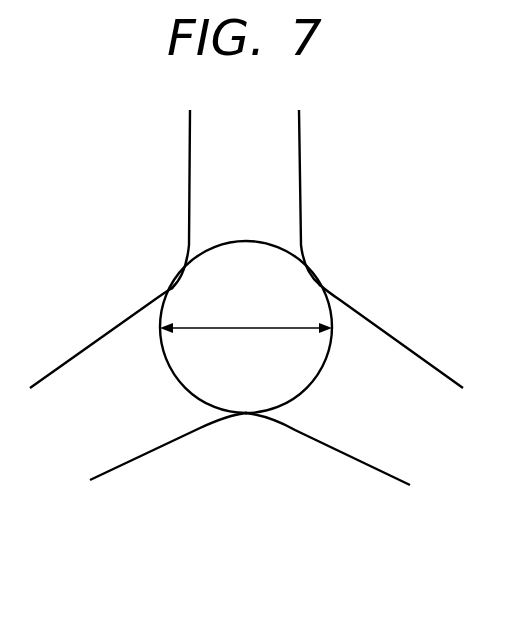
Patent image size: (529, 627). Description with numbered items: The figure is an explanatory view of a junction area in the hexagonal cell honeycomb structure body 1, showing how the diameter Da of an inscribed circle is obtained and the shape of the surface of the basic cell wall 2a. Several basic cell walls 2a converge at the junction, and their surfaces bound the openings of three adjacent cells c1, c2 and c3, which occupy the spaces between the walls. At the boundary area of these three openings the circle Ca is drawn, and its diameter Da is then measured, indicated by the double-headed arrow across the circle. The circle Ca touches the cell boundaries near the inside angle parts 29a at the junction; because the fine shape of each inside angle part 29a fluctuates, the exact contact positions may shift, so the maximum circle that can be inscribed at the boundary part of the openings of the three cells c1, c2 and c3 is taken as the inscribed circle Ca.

The hexagonal cell honeycomb structure body 1 is at (340, 478).
The basic cell wall 2a is at (267, 162).
The inside angle part 29a is at (172, 285).
The inscribed circle Ca is at (242, 242).
The diameter of inscribed circle Da is at (246, 342).
The cell c1 is at (84, 272).
The cell c2 is at (407, 275).
The cell c3 is at (251, 469).